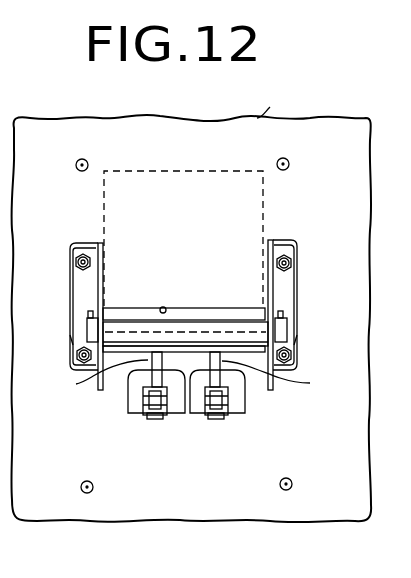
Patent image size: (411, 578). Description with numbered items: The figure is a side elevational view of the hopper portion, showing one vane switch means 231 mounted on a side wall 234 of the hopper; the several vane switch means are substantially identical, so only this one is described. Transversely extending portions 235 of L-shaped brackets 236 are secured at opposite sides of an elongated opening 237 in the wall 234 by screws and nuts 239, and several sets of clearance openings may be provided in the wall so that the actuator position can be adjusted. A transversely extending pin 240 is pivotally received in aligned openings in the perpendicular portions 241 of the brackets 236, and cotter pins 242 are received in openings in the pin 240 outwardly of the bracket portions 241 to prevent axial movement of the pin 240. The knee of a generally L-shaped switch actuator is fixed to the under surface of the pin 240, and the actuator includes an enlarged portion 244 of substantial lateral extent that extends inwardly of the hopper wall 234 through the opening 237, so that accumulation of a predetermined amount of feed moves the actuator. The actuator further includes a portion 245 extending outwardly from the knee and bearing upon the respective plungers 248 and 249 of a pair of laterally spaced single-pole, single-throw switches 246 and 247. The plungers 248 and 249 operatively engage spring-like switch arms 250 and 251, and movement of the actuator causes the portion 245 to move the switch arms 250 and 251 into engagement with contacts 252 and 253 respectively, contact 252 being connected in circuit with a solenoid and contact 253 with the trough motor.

The vane switch means 231 is at (86, 416).
The side wall 234 is at (265, 108).
The transversely extending portions 235 is at (78, 283).
The L-shaped brackets 236 is at (70, 338).
The elongated opening 237 is at (172, 293).
The nuts 239 is at (74, 263).
The transversely extending pin 240 is at (288, 335).
The perpendicular portions 241 is at (97, 291).
The cotter pins 242 is at (87, 318).
The enlarged portion 244 is at (212, 170).
The portion 245 is at (215, 346).
The single-pole, single-throw switch 246 is at (129, 393).
The single-pole, single-throw switch 247 is at (238, 413).
The plunger 248 is at (89, 377).
The plunger 249 is at (285, 378).
The spring-like switch arm 250 is at (143, 388).
The spring-like switch arm 251 is at (228, 390).
The contact 252 is at (162, 414).
The contact 253 is at (222, 422).